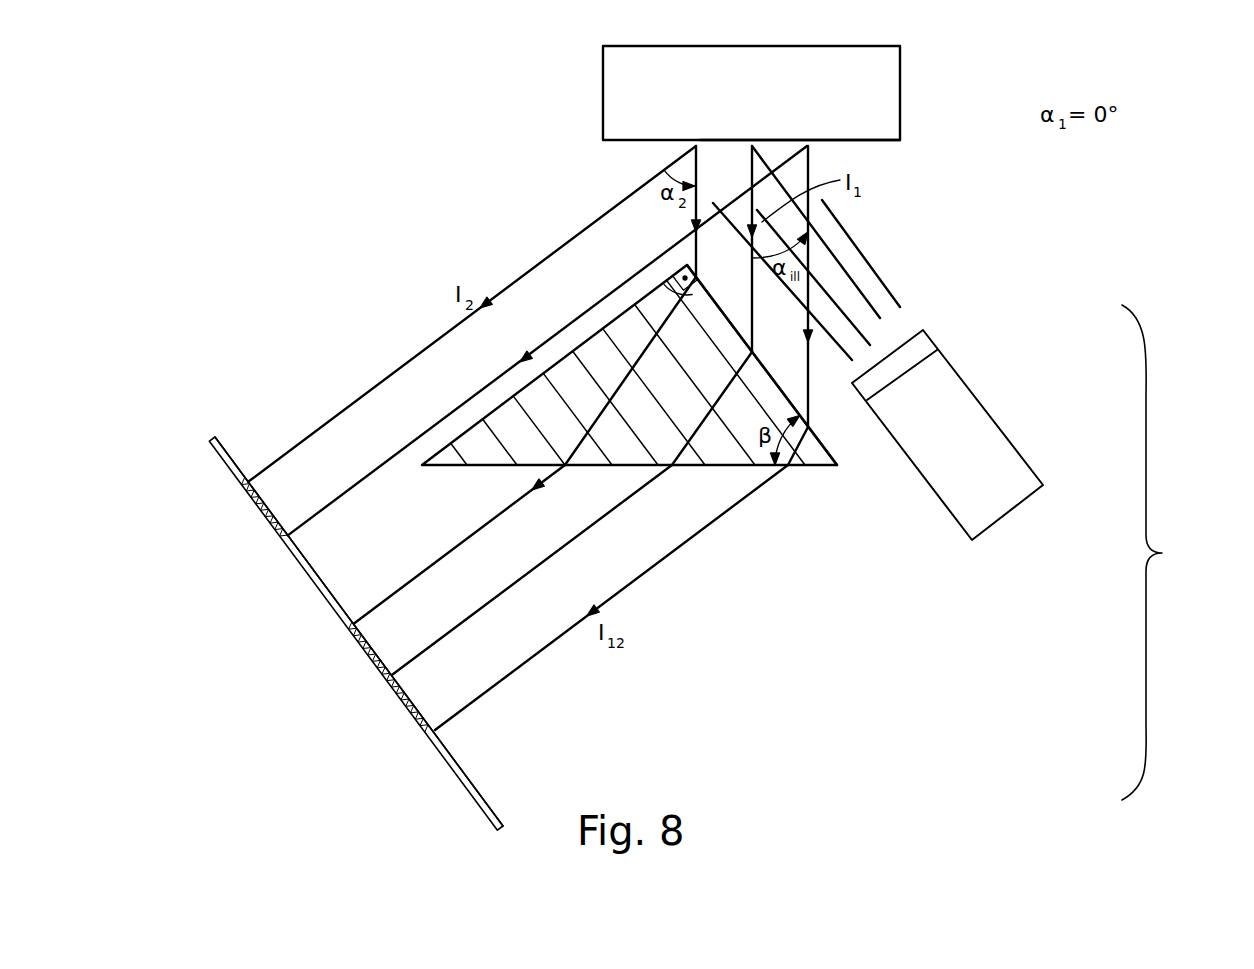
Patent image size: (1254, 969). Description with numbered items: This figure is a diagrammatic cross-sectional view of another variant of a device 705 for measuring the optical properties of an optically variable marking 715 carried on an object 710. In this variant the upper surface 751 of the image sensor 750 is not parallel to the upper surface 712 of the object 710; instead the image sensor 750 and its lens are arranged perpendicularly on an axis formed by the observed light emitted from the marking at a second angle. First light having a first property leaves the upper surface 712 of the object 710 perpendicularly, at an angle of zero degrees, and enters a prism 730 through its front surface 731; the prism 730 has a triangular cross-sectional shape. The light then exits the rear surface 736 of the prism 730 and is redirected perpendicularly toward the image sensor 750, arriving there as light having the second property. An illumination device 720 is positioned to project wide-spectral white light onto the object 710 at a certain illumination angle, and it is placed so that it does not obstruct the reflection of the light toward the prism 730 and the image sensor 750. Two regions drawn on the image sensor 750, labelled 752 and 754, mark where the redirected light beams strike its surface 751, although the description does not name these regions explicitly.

The device 705 is at (1166, 552).
The object 710 is at (880, 85).
The upper surface of object 712 is at (868, 141).
The optically variable marking 715 is at (727, 143).
The illumination device 720 is at (992, 495).
The prism 730 is at (800, 372).
The front surface of prism 731 is at (790, 400).
The rear surface of prism 736 is at (712, 468).
The image sensor 750 is at (503, 826).
The upper surface of image sensor 751 is at (460, 770).
The first reflective coating region 752 is at (263, 510).
The second reflective coating region 754 is at (377, 660).